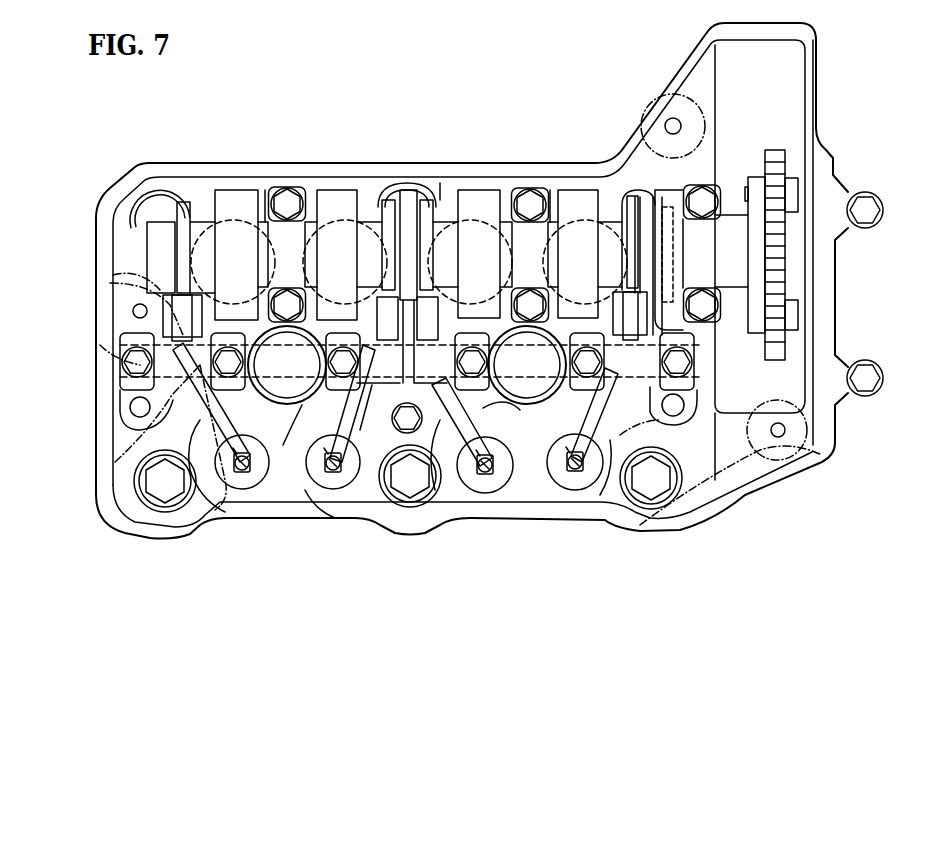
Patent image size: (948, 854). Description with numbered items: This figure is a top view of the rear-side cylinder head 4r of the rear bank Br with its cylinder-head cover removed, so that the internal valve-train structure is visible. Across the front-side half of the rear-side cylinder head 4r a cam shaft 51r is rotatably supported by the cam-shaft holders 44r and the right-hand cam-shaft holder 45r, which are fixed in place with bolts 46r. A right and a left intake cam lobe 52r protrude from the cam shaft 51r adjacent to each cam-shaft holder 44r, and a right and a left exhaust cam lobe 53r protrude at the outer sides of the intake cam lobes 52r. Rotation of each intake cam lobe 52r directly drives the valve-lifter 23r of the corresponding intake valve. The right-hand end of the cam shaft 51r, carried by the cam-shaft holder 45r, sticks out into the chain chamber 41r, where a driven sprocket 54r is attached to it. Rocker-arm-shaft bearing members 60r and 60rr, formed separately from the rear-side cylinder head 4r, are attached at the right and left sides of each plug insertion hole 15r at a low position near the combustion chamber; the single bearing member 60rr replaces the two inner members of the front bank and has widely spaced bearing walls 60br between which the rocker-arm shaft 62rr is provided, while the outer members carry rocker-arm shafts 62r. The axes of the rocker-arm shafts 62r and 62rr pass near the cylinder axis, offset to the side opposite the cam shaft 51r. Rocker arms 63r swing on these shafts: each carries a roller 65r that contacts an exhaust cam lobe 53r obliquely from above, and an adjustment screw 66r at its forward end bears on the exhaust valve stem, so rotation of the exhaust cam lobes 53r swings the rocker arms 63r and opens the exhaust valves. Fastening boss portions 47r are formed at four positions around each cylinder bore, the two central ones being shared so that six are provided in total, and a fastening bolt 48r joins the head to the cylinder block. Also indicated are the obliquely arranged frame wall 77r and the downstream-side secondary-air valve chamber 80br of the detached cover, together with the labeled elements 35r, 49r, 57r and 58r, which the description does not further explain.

The rear-side cylinder head 4r is at (417, 104).
The rear bank Br is at (470, 102).
The plug insertion hole 15r is at (409, 312).
The valve-lifter 23r is at (205, 200).
The rocker shaft support boss 35r is at (248, 490).
The chain chamber 41r is at (744, 177).
The cam-shaft holder 44r is at (265, 200).
The right-hand cam-shaft holder 45r is at (727, 215).
The bolt 46r is at (290, 192).
The fastening boss portion 47r is at (135, 217).
The fastening bolt 48r is at (143, 193).
The cover bolt 49r is at (884, 210).
The cam shaft 51r is at (440, 180).
The intake cam lobe 52r is at (232, 195).
The exhaust cam lobe 53r is at (172, 197).
The driven sprocket 54r is at (773, 150).
The rocker shaft bolt 57r is at (122, 362).
The oil passage hole 58r is at (133, 311).
The rocker-arm-shaft bearing member 60r is at (125, 385).
The bearing wall 60br is at (403, 424).
The rocker-arm-shaft bearing member 60rr is at (380, 495).
The rocker-arm shaft 62r is at (230, 410).
The rocker-arm shaft 62rr is at (462, 425).
The rocker arm 63r is at (213, 497).
The roller 65r is at (143, 287).
The adjustment screw 66r is at (327, 470).
The frame wall 77r is at (113, 463).
The downstream-side secondary-air valve chamber 80br is at (160, 438).